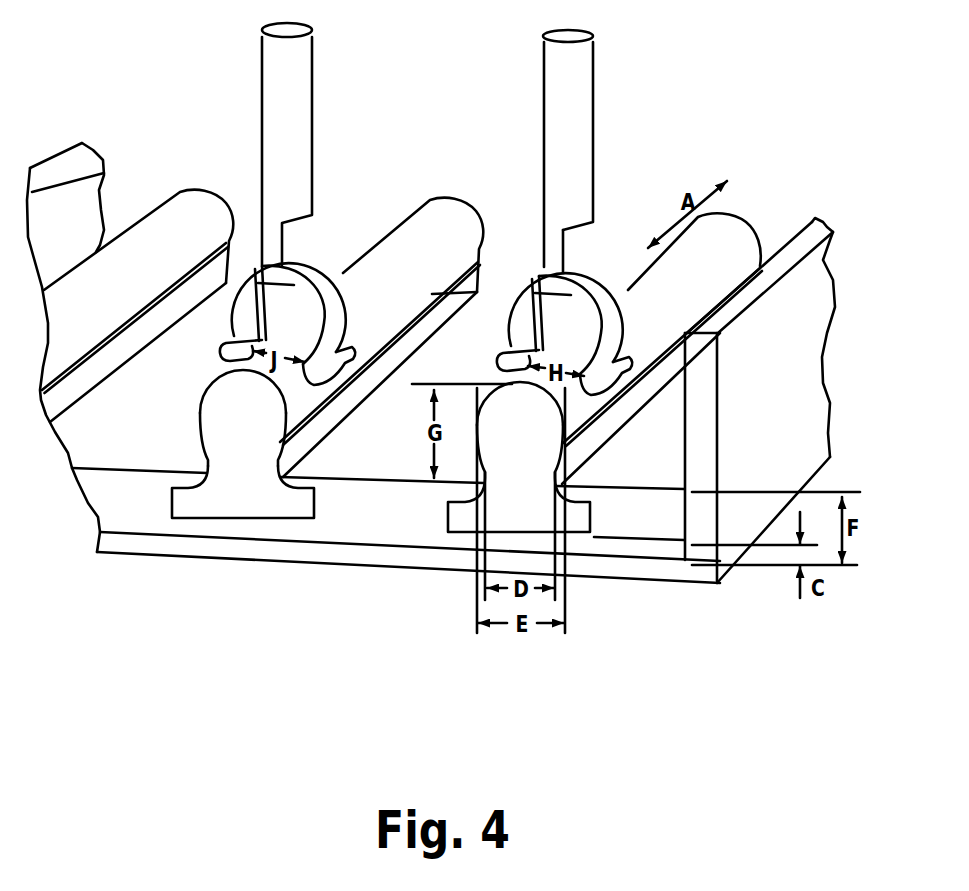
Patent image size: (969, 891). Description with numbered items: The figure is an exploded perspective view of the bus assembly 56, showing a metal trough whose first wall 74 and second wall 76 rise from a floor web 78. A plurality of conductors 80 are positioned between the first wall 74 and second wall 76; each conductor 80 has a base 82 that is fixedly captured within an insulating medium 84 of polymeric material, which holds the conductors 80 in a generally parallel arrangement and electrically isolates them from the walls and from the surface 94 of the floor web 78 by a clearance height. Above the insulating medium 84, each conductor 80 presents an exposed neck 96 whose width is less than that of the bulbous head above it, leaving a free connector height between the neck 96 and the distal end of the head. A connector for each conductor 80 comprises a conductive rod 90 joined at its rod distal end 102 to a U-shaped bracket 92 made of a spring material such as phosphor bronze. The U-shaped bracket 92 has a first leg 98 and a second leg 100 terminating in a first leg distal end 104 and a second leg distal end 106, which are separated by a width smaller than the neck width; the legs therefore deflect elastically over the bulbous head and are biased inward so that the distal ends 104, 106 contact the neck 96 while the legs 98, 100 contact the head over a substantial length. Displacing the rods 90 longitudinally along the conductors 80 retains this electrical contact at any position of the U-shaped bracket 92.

The bus assembly 56 is at (852, 225).
The first wall 74 is at (82, 197).
The second wall 76 is at (783, 390).
The floor web 78 is at (391, 557).
The conductor 80 is at (223, 477).
The base 82 is at (295, 510).
The insulating medium 84 is at (625, 548).
The rod 90 is at (587, 110).
The U-shaped bracket 92 is at (603, 250).
The surface 94 is at (135, 540).
The neck 96 is at (213, 477).
The first leg 98 is at (515, 270).
The second leg 100 is at (607, 277).
The rod distal end 102 is at (553, 257).
The first leg distal end 104 is at (508, 353).
The second leg distal end 106 is at (612, 382).